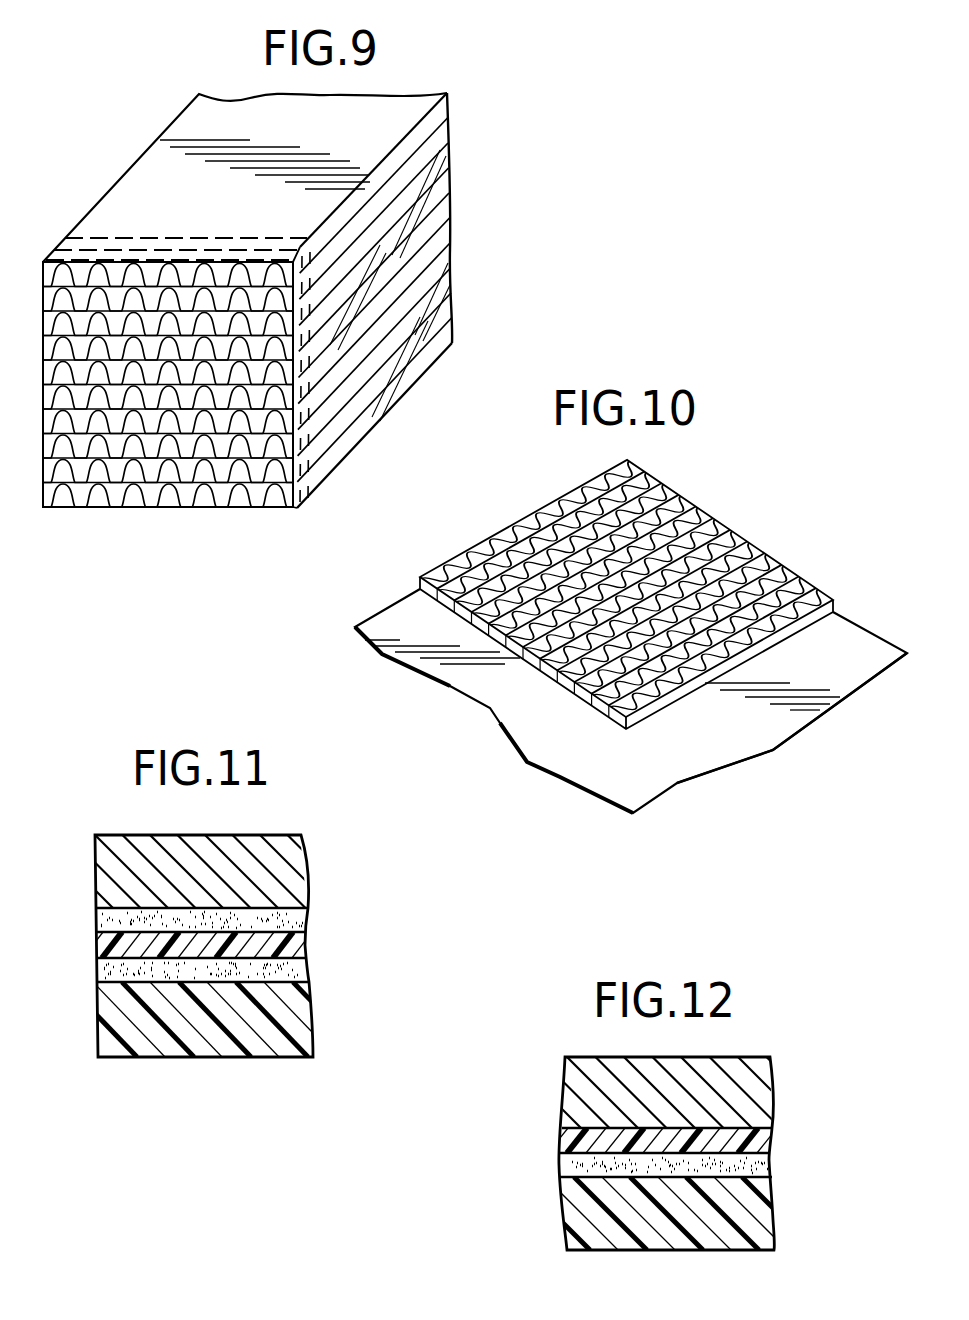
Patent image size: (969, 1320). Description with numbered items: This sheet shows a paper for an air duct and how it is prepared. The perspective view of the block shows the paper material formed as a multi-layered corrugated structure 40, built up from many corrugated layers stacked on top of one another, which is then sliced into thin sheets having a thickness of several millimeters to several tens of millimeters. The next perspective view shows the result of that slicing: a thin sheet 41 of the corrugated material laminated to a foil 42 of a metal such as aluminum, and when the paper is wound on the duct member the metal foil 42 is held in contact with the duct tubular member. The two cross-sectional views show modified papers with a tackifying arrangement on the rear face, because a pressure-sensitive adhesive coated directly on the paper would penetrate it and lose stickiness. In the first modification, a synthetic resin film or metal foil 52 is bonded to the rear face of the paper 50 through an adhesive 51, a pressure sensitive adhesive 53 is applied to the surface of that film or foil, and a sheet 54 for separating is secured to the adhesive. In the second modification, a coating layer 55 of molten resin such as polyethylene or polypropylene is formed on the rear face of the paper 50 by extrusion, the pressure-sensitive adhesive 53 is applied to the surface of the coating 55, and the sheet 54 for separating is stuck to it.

In FIG. 9, the corrugated honeycomb block 40 is at (398, 403).
In FIG. 10, the thin sheet 41 is at (537, 660).
In FIG. 10, the metal foil 42 is at (740, 738).
In FIG. 11, the paper 50 is at (301, 870).
In FIG. 12, the paper 50 is at (760, 1098).
In FIG. 11, the adhesive 51 is at (298, 920).
In FIG. 11, the synthetic resin film or metal foil 52 is at (301, 945).
In FIG. 11, the pressure-sensitive adhesive 53 is at (302, 968).
In FIG. 12, the pressure-sensitive adhesive 53 is at (772, 1165).
In FIG. 11, the sheet for separating 54 is at (308, 1017).
In FIG. 12, the sheet for separating 54 is at (760, 1213).
In FIG. 12, the coating layer 55 is at (770, 1140).